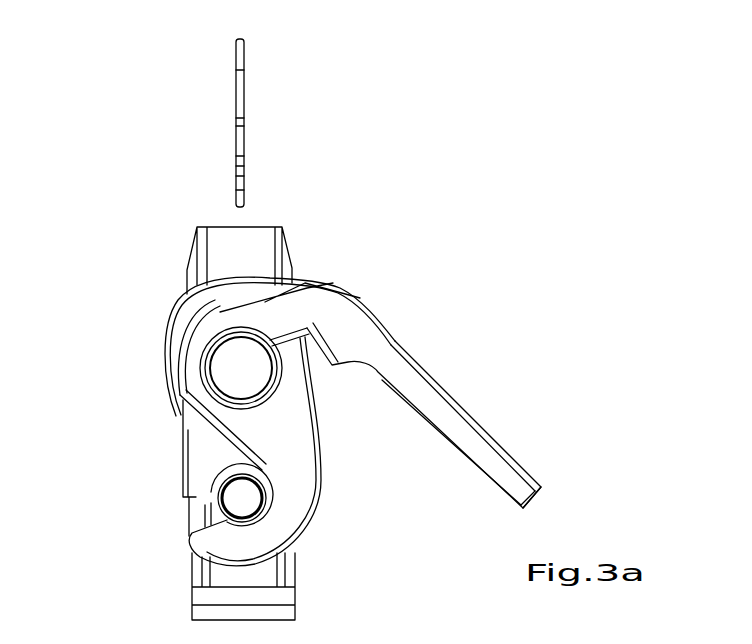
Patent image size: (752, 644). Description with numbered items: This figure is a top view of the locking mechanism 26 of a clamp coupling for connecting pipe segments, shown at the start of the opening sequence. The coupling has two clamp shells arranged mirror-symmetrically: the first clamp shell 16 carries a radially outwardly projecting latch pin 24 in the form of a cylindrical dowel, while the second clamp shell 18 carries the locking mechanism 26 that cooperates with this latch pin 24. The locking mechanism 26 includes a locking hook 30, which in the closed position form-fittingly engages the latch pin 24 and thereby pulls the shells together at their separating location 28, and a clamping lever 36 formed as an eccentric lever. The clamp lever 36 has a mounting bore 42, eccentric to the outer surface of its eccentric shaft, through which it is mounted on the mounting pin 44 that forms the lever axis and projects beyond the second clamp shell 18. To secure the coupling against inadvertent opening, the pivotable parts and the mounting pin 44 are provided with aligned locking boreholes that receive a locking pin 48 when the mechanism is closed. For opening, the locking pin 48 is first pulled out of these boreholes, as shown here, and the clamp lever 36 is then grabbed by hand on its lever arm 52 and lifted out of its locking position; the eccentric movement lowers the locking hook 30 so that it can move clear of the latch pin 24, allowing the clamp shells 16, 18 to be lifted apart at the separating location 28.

The first clamp shell 16 is at (288, 568).
The second clamp shell 18 is at (262, 253).
The latch pin 24 is at (192, 510).
The locking mechanism 26 is at (184, 328).
The separating location 28 is at (215, 430).
The locking hook 30 is at (290, 448).
The clamping lever 36 is at (357, 327).
The mounting bore 42 is at (220, 338).
The mounting pin 44 is at (226, 370).
The locking pin 48 is at (240, 100).
The lever arm 52 is at (520, 475).